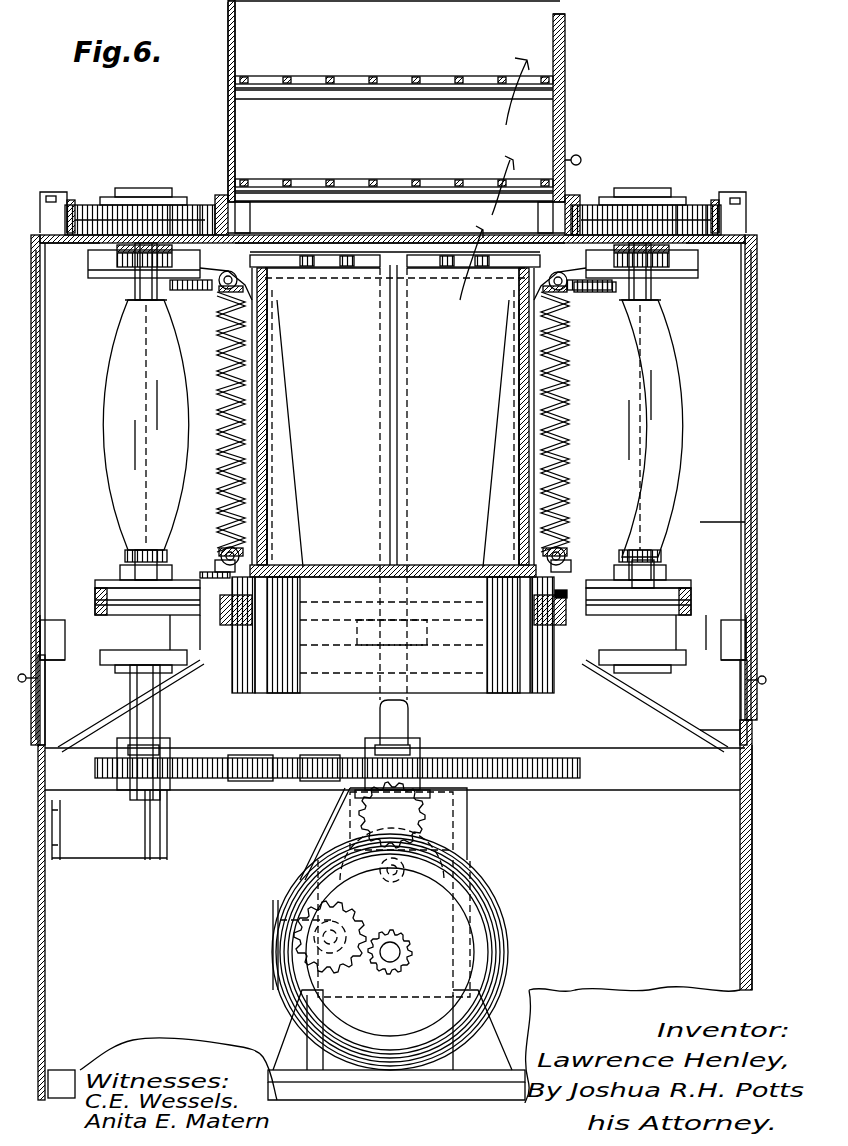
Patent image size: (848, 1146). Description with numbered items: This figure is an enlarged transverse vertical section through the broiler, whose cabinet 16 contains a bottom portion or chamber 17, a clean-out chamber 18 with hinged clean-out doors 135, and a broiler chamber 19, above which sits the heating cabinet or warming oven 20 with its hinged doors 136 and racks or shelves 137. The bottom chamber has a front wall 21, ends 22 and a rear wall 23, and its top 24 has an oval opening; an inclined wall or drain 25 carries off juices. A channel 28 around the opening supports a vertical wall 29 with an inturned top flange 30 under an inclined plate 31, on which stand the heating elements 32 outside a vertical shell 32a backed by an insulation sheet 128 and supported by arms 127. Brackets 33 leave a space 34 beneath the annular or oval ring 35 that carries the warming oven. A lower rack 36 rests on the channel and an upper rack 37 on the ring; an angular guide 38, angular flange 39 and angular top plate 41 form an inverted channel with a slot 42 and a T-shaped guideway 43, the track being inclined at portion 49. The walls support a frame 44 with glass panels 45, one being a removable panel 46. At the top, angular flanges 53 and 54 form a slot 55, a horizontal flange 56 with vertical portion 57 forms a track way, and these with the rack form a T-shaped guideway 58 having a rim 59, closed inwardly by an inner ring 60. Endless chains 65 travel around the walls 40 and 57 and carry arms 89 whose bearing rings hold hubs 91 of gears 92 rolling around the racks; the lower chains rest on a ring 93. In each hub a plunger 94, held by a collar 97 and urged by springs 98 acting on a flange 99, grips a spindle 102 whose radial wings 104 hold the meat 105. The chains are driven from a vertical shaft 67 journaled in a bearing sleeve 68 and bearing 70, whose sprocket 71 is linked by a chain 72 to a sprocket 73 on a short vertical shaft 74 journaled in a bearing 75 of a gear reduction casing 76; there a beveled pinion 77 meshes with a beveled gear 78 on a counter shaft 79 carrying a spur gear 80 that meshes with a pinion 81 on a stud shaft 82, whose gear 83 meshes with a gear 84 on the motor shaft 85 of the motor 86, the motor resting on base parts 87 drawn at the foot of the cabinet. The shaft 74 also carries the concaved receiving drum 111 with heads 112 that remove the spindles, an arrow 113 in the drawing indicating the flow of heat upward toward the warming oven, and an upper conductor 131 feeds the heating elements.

The cabinet 16 is at (752, 822).
The bottom portion or chamber 17 is at (700, 900).
The clean-out chamber 18 is at (752, 730).
The broiler chamber 19 is at (757, 522).
The heating cabinet or warming oven 20 is at (228, 112).
The front wall 21 is at (752, 862).
The ends 22 is at (606, 988).
The rear wall 23 is at (38, 885).
The top 24 is at (757, 243).
The inclined wall or drain 25 is at (110, 718).
The channel 28 is at (243, 670).
The vertical wall 29 is at (280, 660).
The inturned top flange 30 is at (290, 597).
The plate 31 is at (357, 625).
The heating elements 32 is at (345, 470).
The vertical shell 32a is at (272, 497).
The brackets 33 is at (272, 268).
The space 34 is at (318, 268).
The annular or oval ring 35 is at (290, 243).
The lower rack 36 is at (252, 615).
The upper rack 37 is at (242, 216).
The angular guide 38 is at (215, 565).
The angular flange 39 is at (40, 633).
The wall 40 is at (60, 660).
The angular top plate 41 is at (100, 595).
The annular or oval slot 42 is at (100, 583).
The T-shaped guideway 43 is at (95, 600).
The frame 44 is at (45, 303).
The panels 45 is at (35, 370).
The removable panel or door 46 is at (40, 328).
The inclined portion 49 is at (215, 574).
The angular flange 53 is at (218, 284).
The angular flange 54 is at (112, 250).
The slot 55 is at (212, 292).
The horizontal flange 56 is at (58, 240).
The vertical portion 57 is at (72, 202).
The T-shaped guideway 58 is at (112, 205).
The rim 59 is at (52, 192).
The inner ring 60 is at (220, 206).
The endless drive members or chains 65 is at (60, 195).
The vertical shaft 67 is at (160, 700).
The bearing sleeve 68 is at (120, 568).
The bearing 70 is at (148, 835).
The sprocket 71 is at (150, 768).
The chain 72 is at (250, 781).
The sprocket 73 is at (360, 758).
The short vertical shaft 74 is at (408, 227).
The bearing 75 is at (355, 792).
The gear reduction casing 76 is at (318, 838).
The beveled pinion 77 is at (430, 815).
The beveled gear 78 is at (420, 840).
The horizontal counter shaft 79 is at (445, 858).
The spur gear 80 is at (336, 813).
The pinion 81 is at (270, 976).
The stud shaft 82 is at (268, 946).
The gear 83 is at (268, 958).
The gear 84 is at (512, 922).
The motor shaft 85 is at (400, 952).
The motor 86 is at (472, 968).
The base 87 is at (60, 1070).
The arms 89 is at (200, 205).
The hubs 91 is at (172, 205).
The gears 92 is at (132, 197).
The ring 93 is at (55, 662).
The plunger 94 is at (88, 272).
The collar 97 is at (150, 188).
The springs 98 is at (117, 262).
The enlargement or flange 99 is at (120, 278).
The spindles, pins or skewers 102 is at (135, 305).
The peripheral projections or radial wings 104 is at (135, 460).
The meat 105 is at (120, 505).
The concaved receiving drum 111 is at (232, 470).
The heads 112 is at (225, 298).
The arrow 113 is at (464, 254).
The arms 127 is at (280, 322).
The insulation sheet 128 is at (267, 358).
The upper conductor 131 is at (580, 280).
The hinged clean-out doors 135 is at (45, 700).
The hinged doors 136 is at (566, 50).
The racks or shelves 137 is at (450, 78).